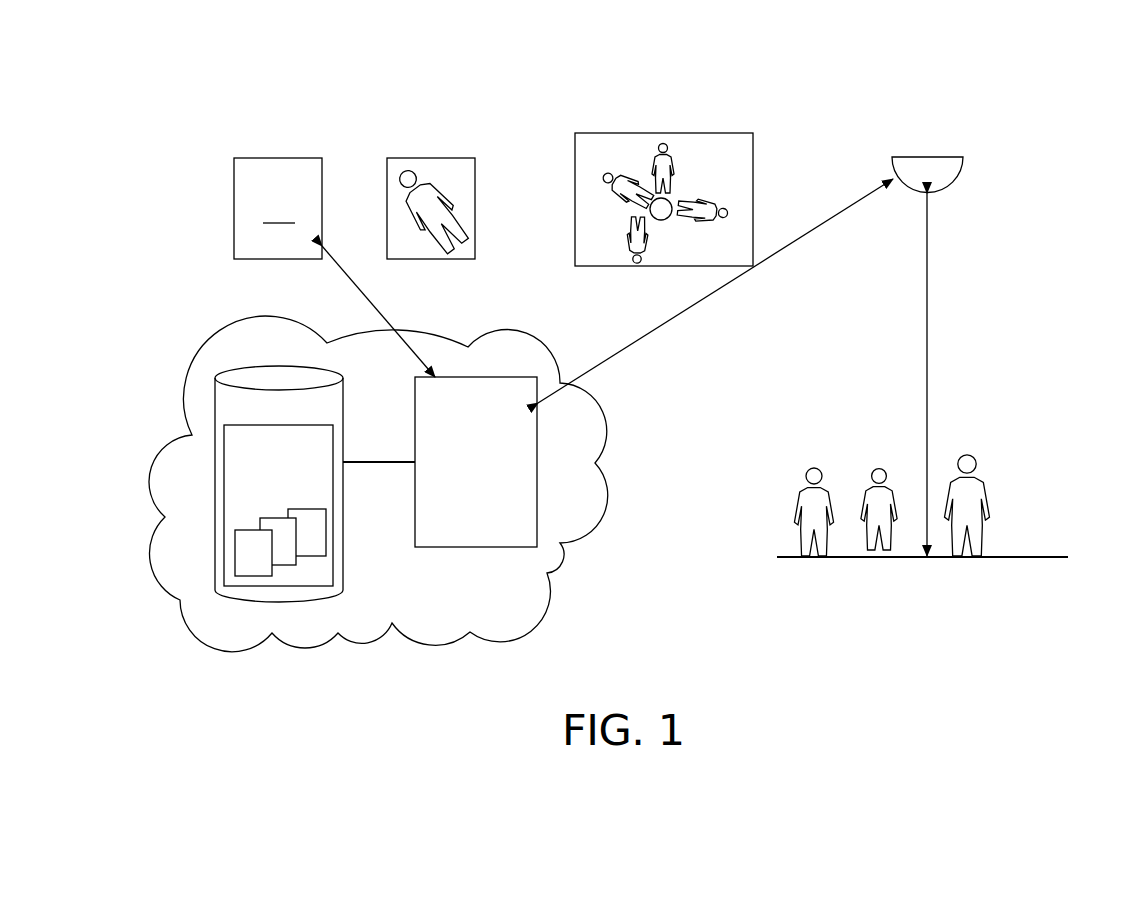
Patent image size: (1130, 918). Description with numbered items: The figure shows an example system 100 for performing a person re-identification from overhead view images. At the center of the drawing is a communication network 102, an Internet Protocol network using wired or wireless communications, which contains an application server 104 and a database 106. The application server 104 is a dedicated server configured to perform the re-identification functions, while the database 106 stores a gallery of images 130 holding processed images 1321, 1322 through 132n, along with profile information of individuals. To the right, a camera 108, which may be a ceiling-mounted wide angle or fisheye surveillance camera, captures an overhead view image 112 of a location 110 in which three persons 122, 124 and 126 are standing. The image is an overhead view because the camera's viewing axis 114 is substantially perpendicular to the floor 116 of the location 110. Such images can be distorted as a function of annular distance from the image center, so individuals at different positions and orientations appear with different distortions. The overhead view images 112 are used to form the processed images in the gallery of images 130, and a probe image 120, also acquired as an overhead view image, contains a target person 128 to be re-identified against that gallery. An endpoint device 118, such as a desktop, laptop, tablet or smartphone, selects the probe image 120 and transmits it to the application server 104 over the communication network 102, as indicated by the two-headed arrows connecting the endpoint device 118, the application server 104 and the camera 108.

The system 100 is at (222, 111).
The communication network 102 is at (550, 592).
The application server 104 is at (537, 467).
The database 106 is at (259, 531).
The camera 108 is at (957, 180).
The location 110 is at (948, 484).
The overhead view image 112 is at (753, 165).
The viewing axis 114 is at (928, 342).
The floor 116 is at (1013, 558).
The endpoint device 118 is at (278, 208).
The probe image 120 is at (459, 183).
The person 122 is at (815, 469).
The person 124 is at (879, 469).
The person 126 is at (968, 455).
The target person 128 is at (445, 215).
The gallery of images 130 is at (259, 561).
The processed image 1321 is at (196, 576).
The processed image 1322 is at (282, 565).
The processed image 132n is at (326, 539).